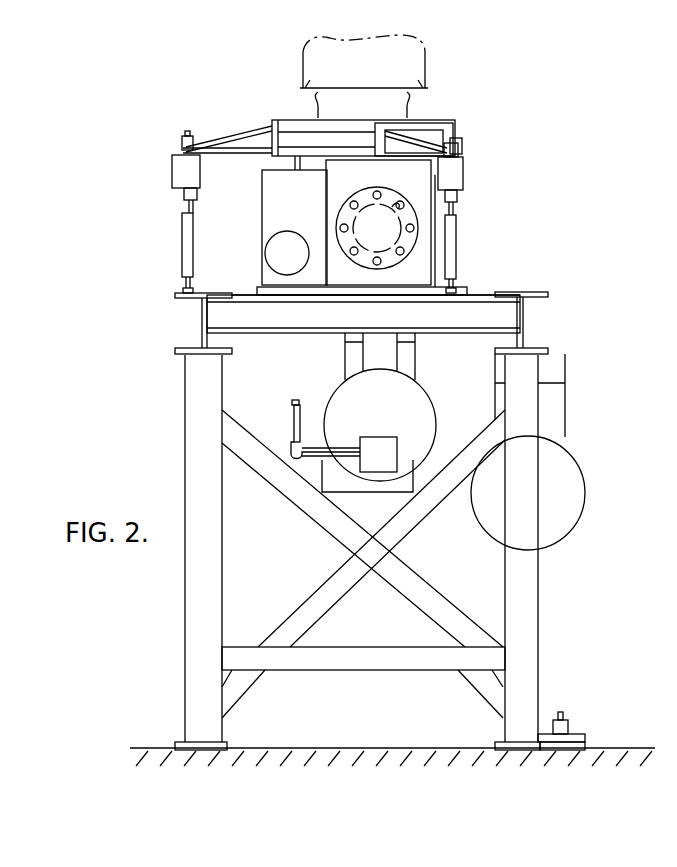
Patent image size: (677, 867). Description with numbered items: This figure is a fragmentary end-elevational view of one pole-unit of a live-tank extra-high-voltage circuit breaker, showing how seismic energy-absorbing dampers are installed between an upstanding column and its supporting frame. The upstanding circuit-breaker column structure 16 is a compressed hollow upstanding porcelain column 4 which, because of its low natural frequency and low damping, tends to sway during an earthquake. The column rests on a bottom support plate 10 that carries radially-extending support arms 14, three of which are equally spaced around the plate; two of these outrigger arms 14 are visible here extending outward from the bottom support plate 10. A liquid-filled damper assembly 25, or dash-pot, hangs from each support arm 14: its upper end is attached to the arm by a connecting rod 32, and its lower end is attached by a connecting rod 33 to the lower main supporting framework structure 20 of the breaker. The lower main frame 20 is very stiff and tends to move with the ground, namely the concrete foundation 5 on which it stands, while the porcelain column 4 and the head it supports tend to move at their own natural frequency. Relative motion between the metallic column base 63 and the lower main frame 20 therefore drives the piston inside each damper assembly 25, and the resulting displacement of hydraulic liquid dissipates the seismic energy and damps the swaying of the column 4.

The upstanding porcelain column 4 is at (428, 64).
The upstanding circuit-breaker column structure 16 is at (302, 62).
The bottom support plate 10 is at (302, 118).
The radially-extending support arm 14 is at (240, 128).
The connecting rod 32 is at (180, 148).
The liquid-filled damper assembly 25 is at (172, 172).
The connecting rod 33 is at (182, 249).
The metallic column base 63 is at (437, 205).
The lower main supporting framework structure 20 is at (532, 607).
The concrete foundation 5 is at (605, 748).